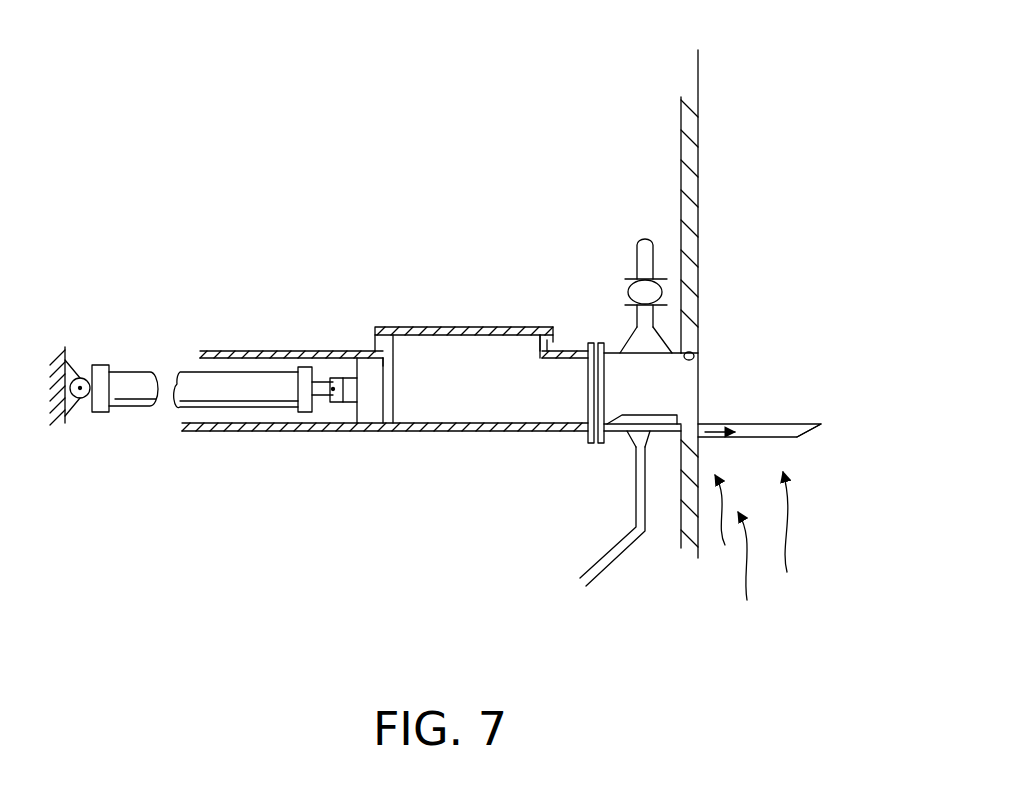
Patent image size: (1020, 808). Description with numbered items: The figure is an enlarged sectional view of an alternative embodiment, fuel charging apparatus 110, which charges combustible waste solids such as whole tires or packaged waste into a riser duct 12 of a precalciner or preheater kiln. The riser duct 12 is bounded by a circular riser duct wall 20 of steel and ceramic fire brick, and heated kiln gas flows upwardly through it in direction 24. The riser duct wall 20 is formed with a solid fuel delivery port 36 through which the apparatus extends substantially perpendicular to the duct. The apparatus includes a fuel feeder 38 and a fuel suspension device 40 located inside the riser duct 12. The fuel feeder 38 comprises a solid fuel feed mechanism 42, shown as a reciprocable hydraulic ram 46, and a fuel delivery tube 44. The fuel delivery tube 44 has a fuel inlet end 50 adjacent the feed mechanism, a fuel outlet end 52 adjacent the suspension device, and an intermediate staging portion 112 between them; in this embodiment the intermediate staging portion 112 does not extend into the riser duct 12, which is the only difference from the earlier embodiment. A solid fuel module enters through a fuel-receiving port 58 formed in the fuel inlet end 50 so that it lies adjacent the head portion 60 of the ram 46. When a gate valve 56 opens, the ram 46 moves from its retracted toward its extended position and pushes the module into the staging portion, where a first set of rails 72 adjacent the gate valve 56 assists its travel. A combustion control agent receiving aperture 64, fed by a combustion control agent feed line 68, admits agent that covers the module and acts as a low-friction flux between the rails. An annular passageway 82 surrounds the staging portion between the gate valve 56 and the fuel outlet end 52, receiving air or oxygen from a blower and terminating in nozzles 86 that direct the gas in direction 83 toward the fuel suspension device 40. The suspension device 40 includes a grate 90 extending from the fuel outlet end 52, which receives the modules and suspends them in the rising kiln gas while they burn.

The riser duct 12 is at (698, 112).
The riser duct wall 20 is at (686, 549).
The kiln gas flow direction 24 is at (786, 545).
The solid fuel delivery port 36 is at (699, 352).
The fuel feeder 38 is at (283, 487).
The fuel suspension device 40 is at (887, 368).
The solid fuel feed mechanism 42 is at (135, 415).
The fuel delivery tube 44 is at (535, 432).
The reciprocable hydraulic ram 46 is at (177, 410).
The fuel inlet end 50 is at (410, 327).
The fuel outlet end 52 is at (712, 424).
The gate valve 56 is at (596, 343).
The fuel-receiving port 58 is at (528, 343).
The head portion 60 is at (364, 433).
The combustion control agent receiving aperture 64 is at (630, 355).
The combustion control agent feed line 68 is at (637, 252).
The first set of rails 72 is at (645, 415).
The annular passageway 82 is at (659, 434).
The oxygen-containing gas direction 83 is at (730, 391).
The nozzles 86 is at (702, 357).
The grate 90 is at (798, 444).
The fuel charging apparatus 110 is at (281, 225).
The intermediate staging portion 112 is at (615, 440).